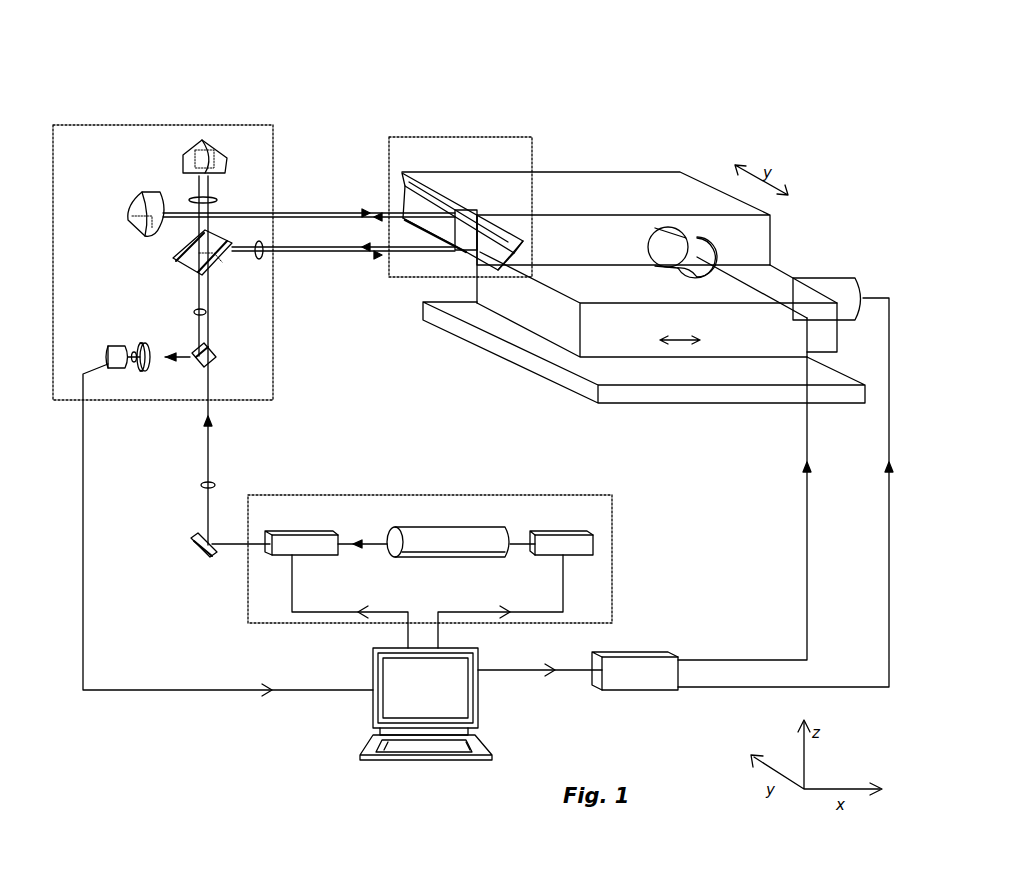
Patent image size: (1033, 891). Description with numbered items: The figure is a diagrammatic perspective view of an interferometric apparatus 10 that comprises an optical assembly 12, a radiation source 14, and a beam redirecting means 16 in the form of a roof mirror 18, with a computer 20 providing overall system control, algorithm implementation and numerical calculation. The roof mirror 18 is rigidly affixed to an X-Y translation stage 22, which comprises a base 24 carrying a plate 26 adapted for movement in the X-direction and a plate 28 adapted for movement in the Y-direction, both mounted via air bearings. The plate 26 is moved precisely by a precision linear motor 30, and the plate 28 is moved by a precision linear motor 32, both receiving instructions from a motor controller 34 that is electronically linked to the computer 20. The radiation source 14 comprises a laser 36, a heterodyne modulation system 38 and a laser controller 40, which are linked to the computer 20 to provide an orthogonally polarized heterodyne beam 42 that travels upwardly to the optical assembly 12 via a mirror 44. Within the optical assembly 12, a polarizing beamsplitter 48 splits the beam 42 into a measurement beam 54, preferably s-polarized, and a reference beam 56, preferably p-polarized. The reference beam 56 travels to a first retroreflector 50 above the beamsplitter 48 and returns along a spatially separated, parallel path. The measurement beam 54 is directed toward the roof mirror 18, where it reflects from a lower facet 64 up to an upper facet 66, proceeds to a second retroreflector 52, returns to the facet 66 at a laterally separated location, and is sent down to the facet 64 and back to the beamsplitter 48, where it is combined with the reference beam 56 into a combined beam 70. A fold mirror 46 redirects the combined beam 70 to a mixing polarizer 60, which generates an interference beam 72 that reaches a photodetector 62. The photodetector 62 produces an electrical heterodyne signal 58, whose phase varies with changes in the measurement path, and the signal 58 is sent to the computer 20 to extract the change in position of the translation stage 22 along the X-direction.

The interferometric apparatus 10 is at (358, 50).
The optical assembly 12 is at (186, 108).
The radiation source 14 is at (429, 477).
The beam redirecting means 16 is at (426, 118).
The roof mirror 18 is at (450, 196).
The computer 20 is at (373, 704).
The X-Y translation stage 22 is at (612, 155).
The base 24 is at (640, 395).
The plate 26 is at (605, 343).
The plate 28 is at (578, 250).
The precision linear motor 30 is at (808, 280).
The precision linear motor 32 is at (686, 228).
The motor controller 34 is at (632, 652).
The laser 36 is at (423, 529).
The heterodyne modulation system 38 is at (300, 529).
The laser controller 40 is at (560, 529).
The orthogonally polarized heterodyne beam 42 is at (215, 485).
The mirror 44 is at (197, 552).
The fold mirror 46 is at (216, 352).
The polarizing beamsplitter 48 is at (180, 262).
The first retroreflector 50 is at (185, 158).
The second retroreflector 52 is at (140, 205).
The measurement beam 54 is at (256, 260).
The reference beam 56 is at (217, 200).
The electrical heterodyne signal 58 is at (83, 440).
The mixing polarizer 60 is at (150, 346).
The photodetector 62 is at (106, 352).
The lower facet 64 is at (522, 246).
The upper facet 66 is at (418, 196).
The combined beam 70 is at (194, 312).
The interference beam 72 is at (133, 350).